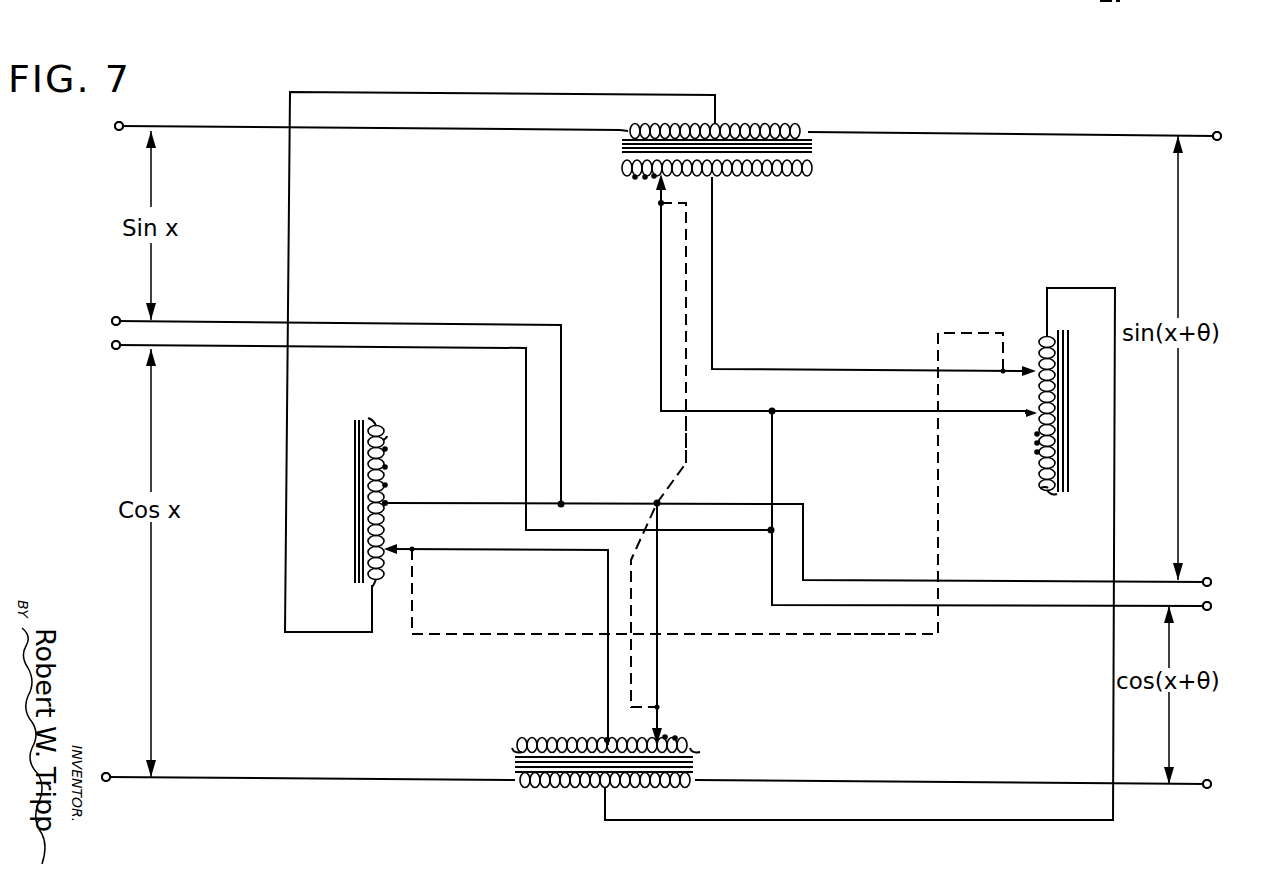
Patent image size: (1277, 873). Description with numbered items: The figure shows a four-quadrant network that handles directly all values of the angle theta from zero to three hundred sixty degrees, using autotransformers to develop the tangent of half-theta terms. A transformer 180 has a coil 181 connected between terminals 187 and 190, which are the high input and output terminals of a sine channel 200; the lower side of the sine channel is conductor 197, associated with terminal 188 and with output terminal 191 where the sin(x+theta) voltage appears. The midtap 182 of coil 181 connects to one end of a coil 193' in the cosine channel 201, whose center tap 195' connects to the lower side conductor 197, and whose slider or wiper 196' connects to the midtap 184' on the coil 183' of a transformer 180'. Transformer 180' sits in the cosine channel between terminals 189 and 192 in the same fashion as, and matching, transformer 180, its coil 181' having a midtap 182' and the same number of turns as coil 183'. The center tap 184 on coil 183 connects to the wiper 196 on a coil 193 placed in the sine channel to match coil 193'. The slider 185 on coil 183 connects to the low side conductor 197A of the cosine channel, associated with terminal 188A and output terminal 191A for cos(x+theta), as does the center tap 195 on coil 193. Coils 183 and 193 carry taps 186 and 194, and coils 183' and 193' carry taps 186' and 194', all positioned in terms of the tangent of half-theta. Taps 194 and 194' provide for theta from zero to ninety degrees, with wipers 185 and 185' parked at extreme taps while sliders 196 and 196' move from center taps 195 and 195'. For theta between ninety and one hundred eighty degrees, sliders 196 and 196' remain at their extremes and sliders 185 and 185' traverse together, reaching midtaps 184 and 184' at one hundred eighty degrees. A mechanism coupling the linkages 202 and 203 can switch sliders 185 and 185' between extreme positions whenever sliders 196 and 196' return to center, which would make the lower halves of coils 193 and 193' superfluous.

The transformer 180 is at (750, 155).
The coil 181 is at (739, 115).
The midtap 182 is at (747, 104).
The coil 183 is at (726, 180).
The center tap 184 is at (739, 273).
The slider 185 is at (619, 300).
The taps 186 is at (617, 187).
The input terminal 187 is at (118, 129).
The terminal 188 is at (116, 320).
The terminal 188A is at (120, 347).
The terminal 189 is at (114, 771).
The output terminal 190 is at (1220, 137).
The output terminal 191 is at (1211, 580).
The output terminal 191A is at (1209, 610).
The output terminal 192 is at (1209, 788).
The coil 193 is at (1016, 487).
The taps 194 is at (1012, 450).
The center tap 195 is at (1012, 429).
The wiper 196 is at (1031, 399).
The lower side conductor 197 is at (561, 428).
The low side conductor 197A is at (525, 433).
The sine channel 200 is at (240, 273).
The cosine channel 201 is at (224, 582).
The linkage 202 is at (686, 432).
The linkage 203 is at (878, 637).
The transformer 180' is at (641, 758).
The coil 181' is at (584, 796).
The midtap 182' is at (572, 803).
The coil 183' is at (582, 733).
The midtap 184' is at (578, 647).
The slider 185' is at (693, 666).
The taps 186' is at (707, 724).
The coil 193' is at (417, 437).
The taps 194' is at (416, 467).
The center tap 195' is at (416, 490).
The slider 196' is at (403, 502).